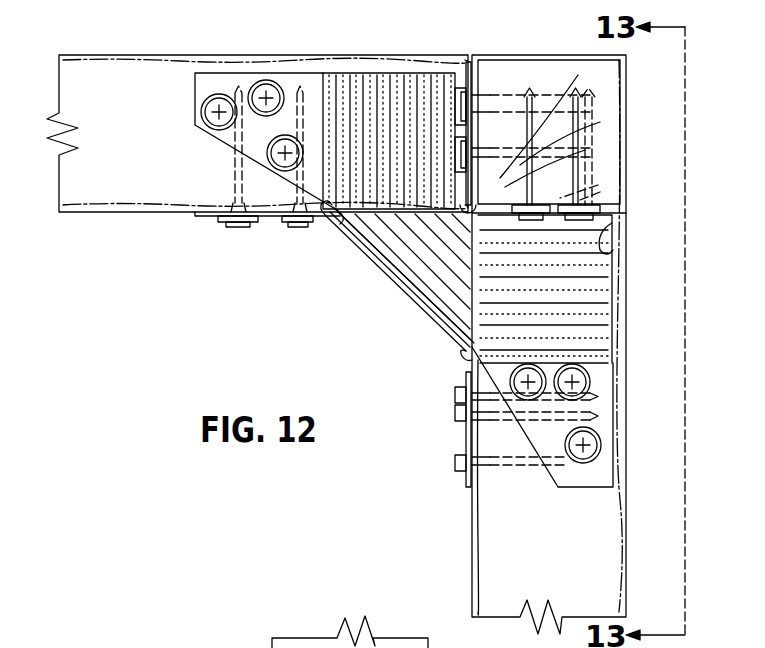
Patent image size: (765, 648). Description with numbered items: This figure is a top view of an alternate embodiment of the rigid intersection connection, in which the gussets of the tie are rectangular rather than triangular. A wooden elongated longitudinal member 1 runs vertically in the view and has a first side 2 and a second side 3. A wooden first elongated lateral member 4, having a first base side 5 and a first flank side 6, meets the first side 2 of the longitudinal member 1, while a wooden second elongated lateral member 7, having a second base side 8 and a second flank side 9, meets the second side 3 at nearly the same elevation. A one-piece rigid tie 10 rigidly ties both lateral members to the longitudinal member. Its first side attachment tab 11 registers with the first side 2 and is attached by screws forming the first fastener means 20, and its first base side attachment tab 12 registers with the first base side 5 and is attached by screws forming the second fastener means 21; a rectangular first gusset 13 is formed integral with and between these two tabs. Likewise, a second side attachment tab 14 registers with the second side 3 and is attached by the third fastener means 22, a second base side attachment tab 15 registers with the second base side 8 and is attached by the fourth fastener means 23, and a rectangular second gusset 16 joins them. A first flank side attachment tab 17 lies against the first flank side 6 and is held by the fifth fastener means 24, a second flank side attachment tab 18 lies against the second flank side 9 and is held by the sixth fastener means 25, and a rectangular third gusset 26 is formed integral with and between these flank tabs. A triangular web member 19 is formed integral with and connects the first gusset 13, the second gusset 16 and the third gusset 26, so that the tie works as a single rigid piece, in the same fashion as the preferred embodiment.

The elongated longitudinal member 1 is at (545, 47).
The first side 2 is at (462, 64).
The second side 3 is at (602, 218).
The first elongated lateral member 4 is at (97, 44).
The first base side 5 is at (120, 177).
The first flank side 6 is at (95, 213).
The second elongated lateral member 7 is at (645, 275).
The second base side 8 is at (607, 588).
The second flank side 9 is at (472, 548).
The one-piece rigid tie 10 is at (370, 277).
The first side attachment tab 11 is at (465, 78).
The first base side attachment tab 12 is at (305, 78).
The first gusset 13 is at (395, 79).
The second side attachment tab 14 is at (606, 238).
The second base side attachment tab 15 is at (612, 405).
The second gusset 16 is at (610, 318).
The first flank side attachment tab 17 is at (200, 214).
The second flank side attachment tab 18 is at (467, 483).
The triangular web member 19 is at (438, 283).
The first fastener means 20 is at (503, 97).
The second fastener means 21 is at (223, 93).
The third fastener means 22 is at (596, 196).
The fourth fastener means 23 is at (592, 372).
The fifth fastener means 24 is at (292, 228).
The sixth fastener means 25 is at (455, 462).
The third gusset 26 is at (403, 293).